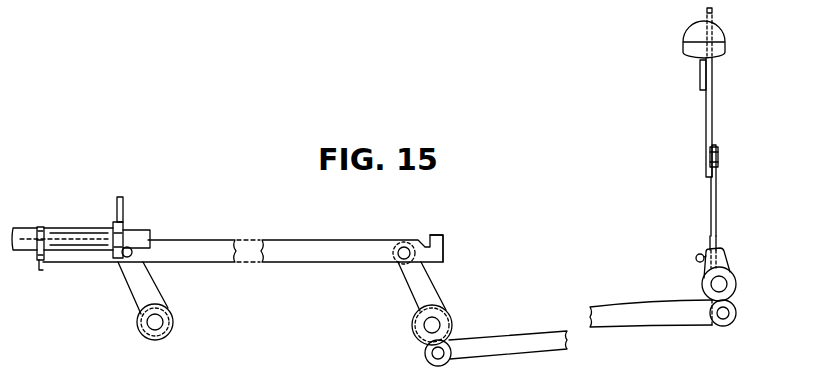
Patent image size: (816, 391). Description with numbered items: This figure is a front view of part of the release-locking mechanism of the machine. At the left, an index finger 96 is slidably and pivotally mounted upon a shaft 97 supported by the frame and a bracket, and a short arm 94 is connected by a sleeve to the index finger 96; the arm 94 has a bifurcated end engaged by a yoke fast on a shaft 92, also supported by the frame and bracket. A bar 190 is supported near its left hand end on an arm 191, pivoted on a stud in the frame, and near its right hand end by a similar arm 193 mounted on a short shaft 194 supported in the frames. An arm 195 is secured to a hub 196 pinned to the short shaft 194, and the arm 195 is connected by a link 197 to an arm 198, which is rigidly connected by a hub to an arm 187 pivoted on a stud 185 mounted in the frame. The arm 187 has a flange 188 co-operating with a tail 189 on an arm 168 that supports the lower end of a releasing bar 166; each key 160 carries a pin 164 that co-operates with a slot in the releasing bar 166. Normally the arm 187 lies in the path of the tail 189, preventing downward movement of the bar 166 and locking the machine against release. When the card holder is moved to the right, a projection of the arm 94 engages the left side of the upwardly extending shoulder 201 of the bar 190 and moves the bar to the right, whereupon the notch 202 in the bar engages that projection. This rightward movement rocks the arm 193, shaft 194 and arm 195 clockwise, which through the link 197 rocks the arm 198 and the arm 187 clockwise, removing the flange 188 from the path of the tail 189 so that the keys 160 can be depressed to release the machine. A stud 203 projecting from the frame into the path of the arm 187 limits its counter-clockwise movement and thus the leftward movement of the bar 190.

The key 160 is at (690, 36).
The pin 164 is at (715, 60).
The releasing bar 166 is at (712, 105).
The arm 168 is at (716, 185).
The tail 189 is at (718, 237).
The flange 188 is at (723, 255).
The arm 187 is at (728, 265).
The stud 185 is at (722, 286).
The arm 198 is at (735, 300).
The stud 203 is at (696, 258).
The link 197 is at (589, 314).
The arm 195 is at (428, 349).
The short shaft 194 is at (432, 325).
The hub 196 is at (423, 310).
The arm 193 is at (410, 277).
The notch 202 is at (427, 241).
The shoulder 201 is at (433, 236).
The bar 190 is at (328, 229).
The arm 191 is at (134, 286).
The shaft 92 is at (152, 325).
The arm 94 is at (43, 271).
The index finger 96 is at (123, 208).
The shaft 97 is at (37, 227).